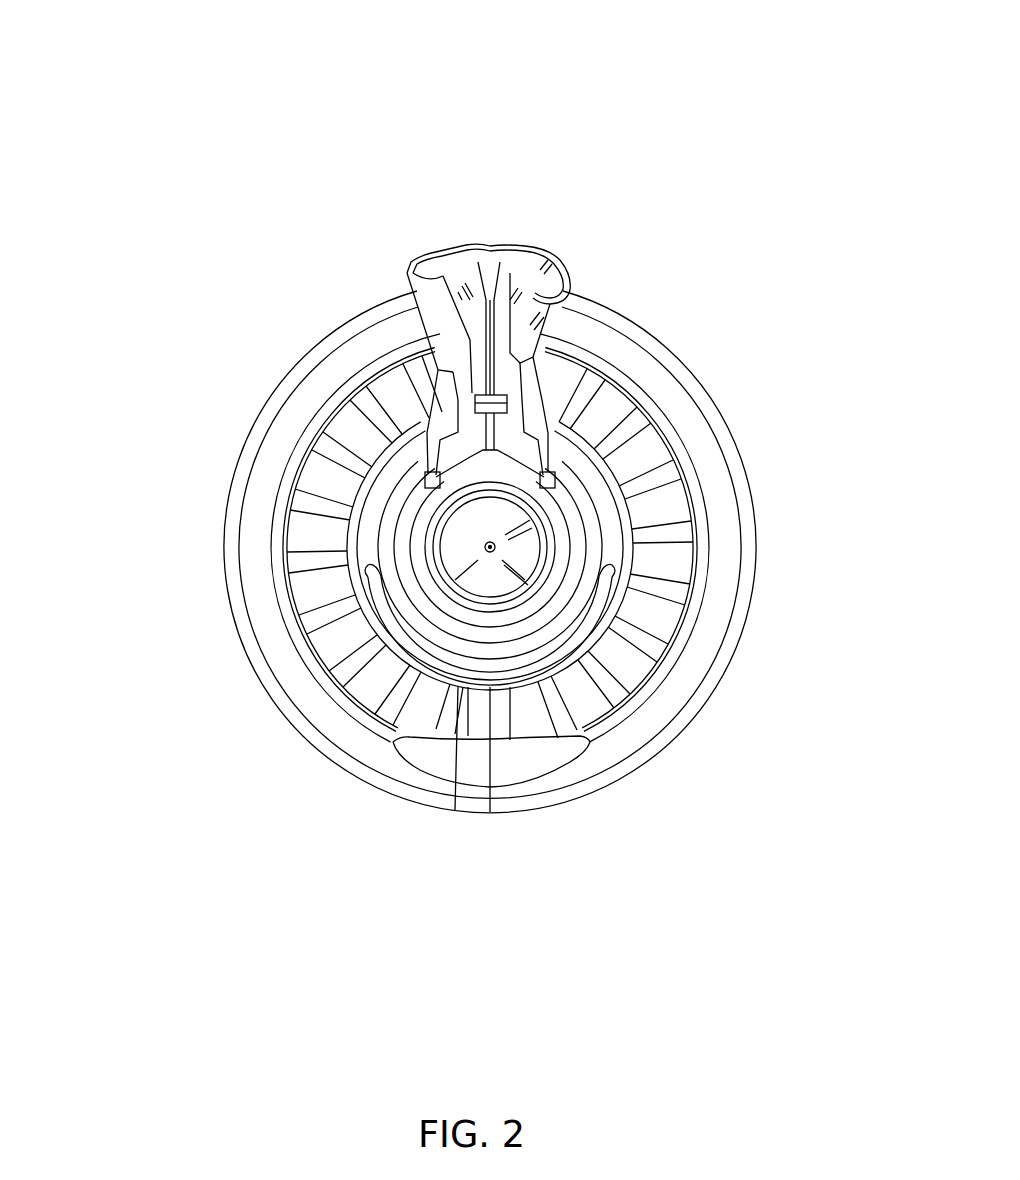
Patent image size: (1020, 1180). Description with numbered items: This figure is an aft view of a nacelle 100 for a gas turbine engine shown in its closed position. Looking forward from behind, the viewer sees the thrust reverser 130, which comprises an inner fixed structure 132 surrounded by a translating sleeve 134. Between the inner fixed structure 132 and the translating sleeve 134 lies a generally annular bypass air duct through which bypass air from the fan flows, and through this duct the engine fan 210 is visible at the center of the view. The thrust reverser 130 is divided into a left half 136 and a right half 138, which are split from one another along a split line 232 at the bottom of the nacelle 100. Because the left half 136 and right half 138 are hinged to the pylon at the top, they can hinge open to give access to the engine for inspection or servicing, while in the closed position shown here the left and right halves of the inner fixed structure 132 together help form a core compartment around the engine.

The nacelle 100 is at (677, 186).
The thrust reverser 130 is at (258, 575).
The inner fixed structure 132 is at (577, 453).
The translating sleeve 134 is at (672, 480).
The left half 136 is at (288, 702).
The right half 138 is at (653, 743).
The engine fan 210 is at (650, 625).
The split line 232 is at (490, 767).